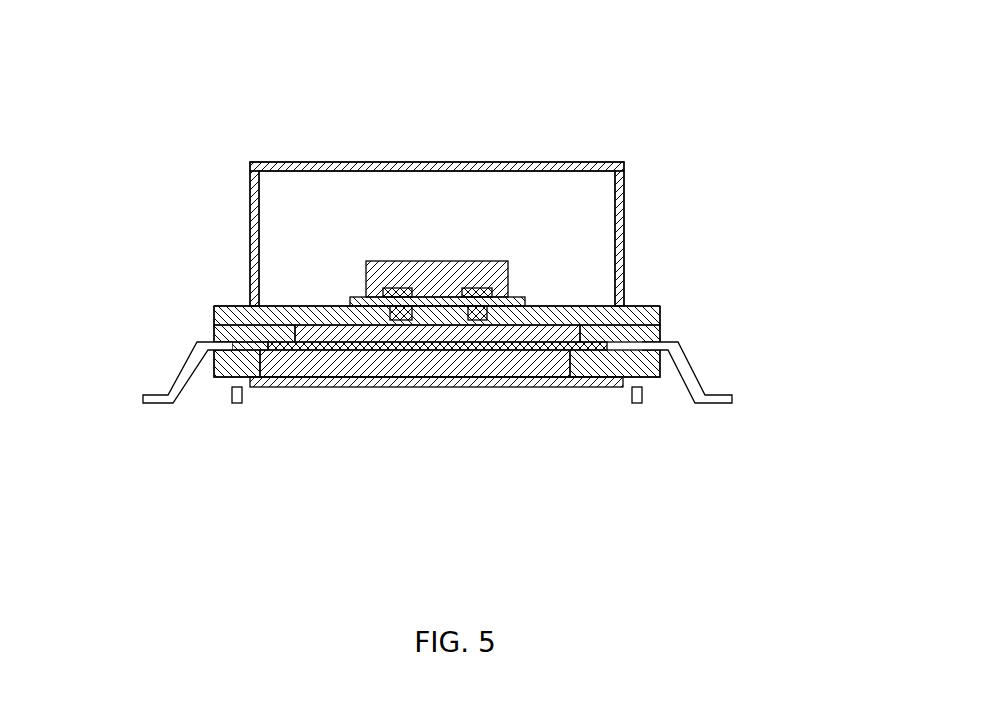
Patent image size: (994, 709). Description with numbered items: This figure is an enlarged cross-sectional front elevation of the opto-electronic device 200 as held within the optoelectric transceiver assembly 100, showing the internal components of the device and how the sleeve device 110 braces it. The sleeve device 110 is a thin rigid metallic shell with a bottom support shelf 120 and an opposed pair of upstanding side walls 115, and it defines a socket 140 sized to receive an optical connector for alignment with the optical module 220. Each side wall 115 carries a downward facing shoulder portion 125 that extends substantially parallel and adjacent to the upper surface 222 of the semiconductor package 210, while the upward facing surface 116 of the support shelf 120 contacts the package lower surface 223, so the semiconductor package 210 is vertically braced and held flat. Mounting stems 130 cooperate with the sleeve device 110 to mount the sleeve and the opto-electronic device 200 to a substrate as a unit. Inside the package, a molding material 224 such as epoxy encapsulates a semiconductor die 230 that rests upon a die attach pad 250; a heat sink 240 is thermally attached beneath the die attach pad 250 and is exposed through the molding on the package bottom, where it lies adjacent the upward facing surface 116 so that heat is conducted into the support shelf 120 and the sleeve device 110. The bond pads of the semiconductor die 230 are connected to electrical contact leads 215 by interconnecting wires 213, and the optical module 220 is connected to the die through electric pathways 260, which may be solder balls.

The optoelectric transceiver assembly 100 is at (627, 113).
The sleeve device 110 is at (482, 162).
The side walls 115 is at (250, 190).
The upward facing surface 116 is at (342, 357).
The bottom support shelf 120 is at (455, 387).
The shoulder portion 125 is at (228, 308).
The mounting stems 130 is at (642, 403).
The socket 140 is at (363, 188).
The opto-electronic device 200 is at (666, 329).
The semiconductor package 210 is at (213, 333).
The interconnecting wires 213 is at (215, 306).
The electrical contact lead 215 is at (170, 376).
The optical module 220 is at (532, 258).
The upper surface 222 is at (237, 310).
The lower surface 223 is at (652, 375).
The molding material 224 is at (233, 347).
The semiconductor die 230 is at (345, 300).
The heat sink 240 is at (300, 352).
The die attach pad 250 is at (260, 346).
The electric pathways 260 is at (415, 312).